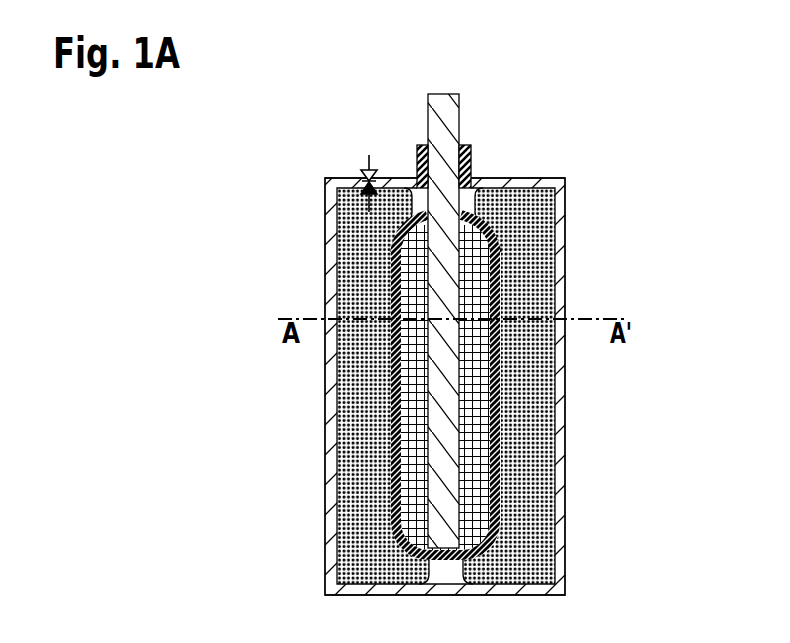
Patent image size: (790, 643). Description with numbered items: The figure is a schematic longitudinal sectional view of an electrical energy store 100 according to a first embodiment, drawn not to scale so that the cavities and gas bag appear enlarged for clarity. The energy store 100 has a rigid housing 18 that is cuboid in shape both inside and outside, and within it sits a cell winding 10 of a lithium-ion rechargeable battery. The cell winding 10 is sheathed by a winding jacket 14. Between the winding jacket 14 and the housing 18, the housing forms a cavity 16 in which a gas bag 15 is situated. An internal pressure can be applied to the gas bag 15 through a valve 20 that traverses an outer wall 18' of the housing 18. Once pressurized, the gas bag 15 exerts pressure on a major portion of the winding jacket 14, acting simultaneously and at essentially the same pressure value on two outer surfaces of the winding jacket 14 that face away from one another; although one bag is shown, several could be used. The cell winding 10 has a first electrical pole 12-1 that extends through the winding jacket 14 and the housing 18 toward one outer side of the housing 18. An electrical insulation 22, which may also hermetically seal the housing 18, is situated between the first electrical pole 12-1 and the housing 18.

The electrical energy store 100 is at (160, 168).
The cell winding 10 is at (480, 421).
The first electrical pole 12-1 is at (460, 119).
The winding jacket 14 is at (500, 477).
The gas bag 15 is at (412, 213).
The cavity 16 is at (357, 275).
The housing 18 is at (493, 386).
The outer wall 18' is at (392, 145).
The valve 20 is at (365, 156).
The electrical insulation 22 is at (471, 158).